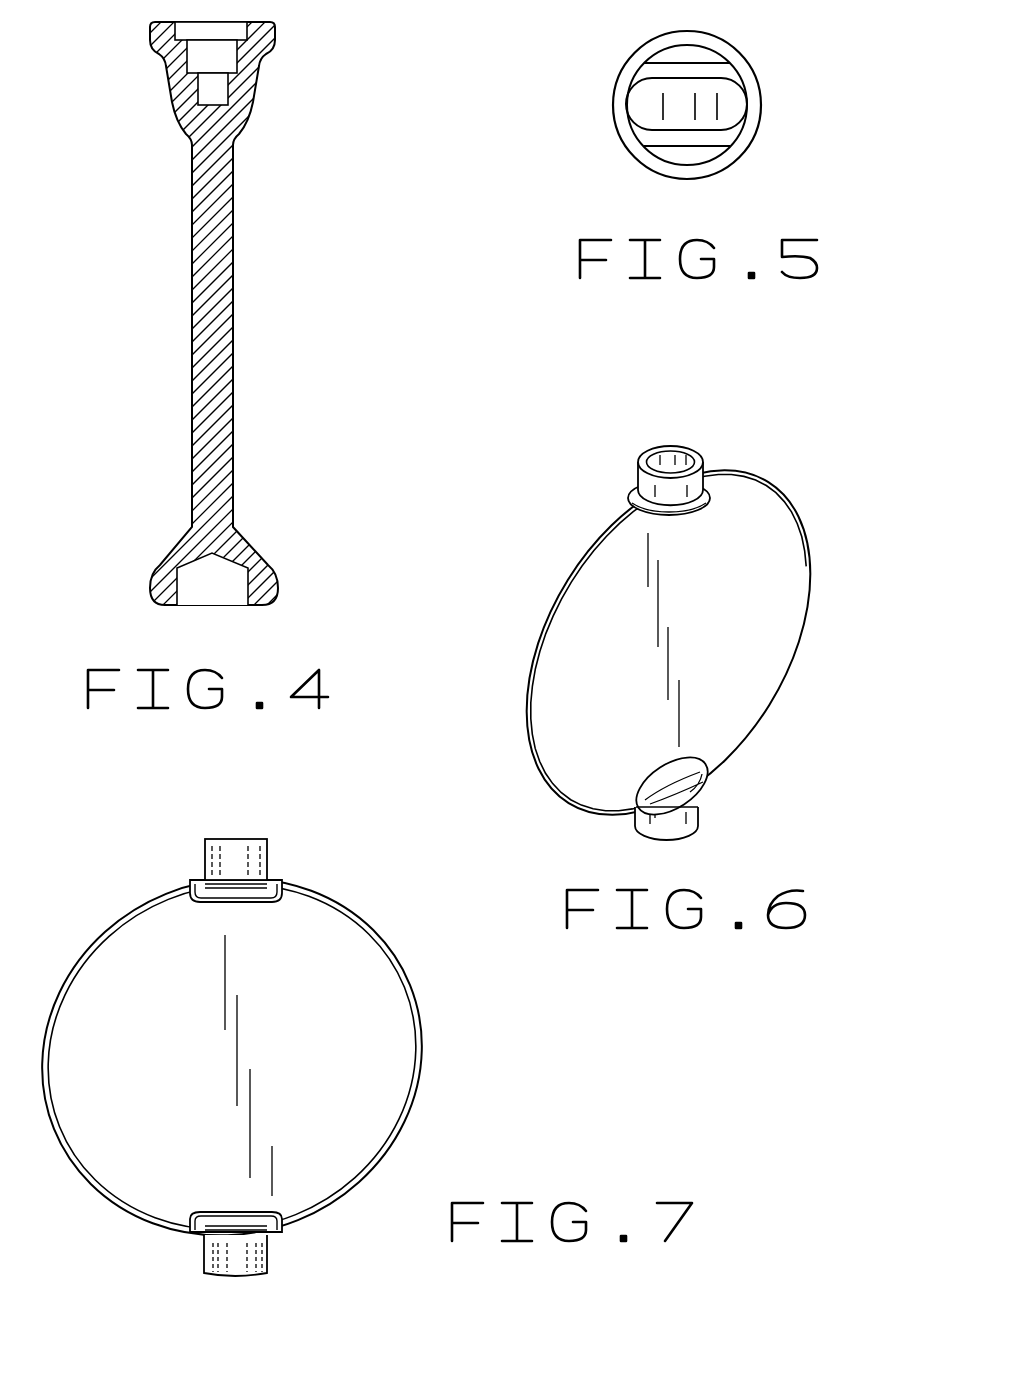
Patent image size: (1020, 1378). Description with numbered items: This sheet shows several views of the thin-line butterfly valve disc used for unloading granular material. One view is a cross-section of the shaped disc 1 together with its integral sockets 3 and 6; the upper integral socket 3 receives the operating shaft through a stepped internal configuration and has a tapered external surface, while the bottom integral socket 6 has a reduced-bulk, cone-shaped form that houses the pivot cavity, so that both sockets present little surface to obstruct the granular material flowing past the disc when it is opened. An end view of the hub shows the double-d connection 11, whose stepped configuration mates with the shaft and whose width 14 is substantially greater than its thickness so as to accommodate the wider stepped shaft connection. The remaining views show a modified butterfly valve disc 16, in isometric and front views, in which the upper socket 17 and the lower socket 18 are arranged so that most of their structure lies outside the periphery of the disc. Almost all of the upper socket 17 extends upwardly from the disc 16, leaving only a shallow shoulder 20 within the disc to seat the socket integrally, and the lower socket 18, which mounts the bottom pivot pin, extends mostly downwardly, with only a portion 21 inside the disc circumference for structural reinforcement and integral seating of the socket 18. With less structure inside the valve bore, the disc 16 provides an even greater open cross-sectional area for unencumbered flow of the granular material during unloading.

In FIG. 4, the shaped disc 1 is at (236, 230).
In FIG. 4, the integral socket 3 is at (263, 58).
In FIG. 4, the integral socket 6 is at (250, 548).
In FIG. 5, the double-d connection 11 is at (728, 45).
In FIG. 5, the width of the socket 14 is at (668, 107).
In FIG. 6, the modified butterfly valve disc 16 is at (795, 509).
In FIG. 7, the modified butterfly valve disc 16 is at (367, 931).
In FIG. 6, the upper socket 17 is at (640, 478).
In FIG. 7, the upper socket 17 is at (205, 855).
In FIG. 6, the lower socket 18 is at (633, 823).
In FIG. 7, the lower socket 18 is at (267, 1263).
In FIG. 7, the shallow shoulder 20 is at (213, 898).
In FIG. 7, the reinforcement portion 21 is at (237, 1218).